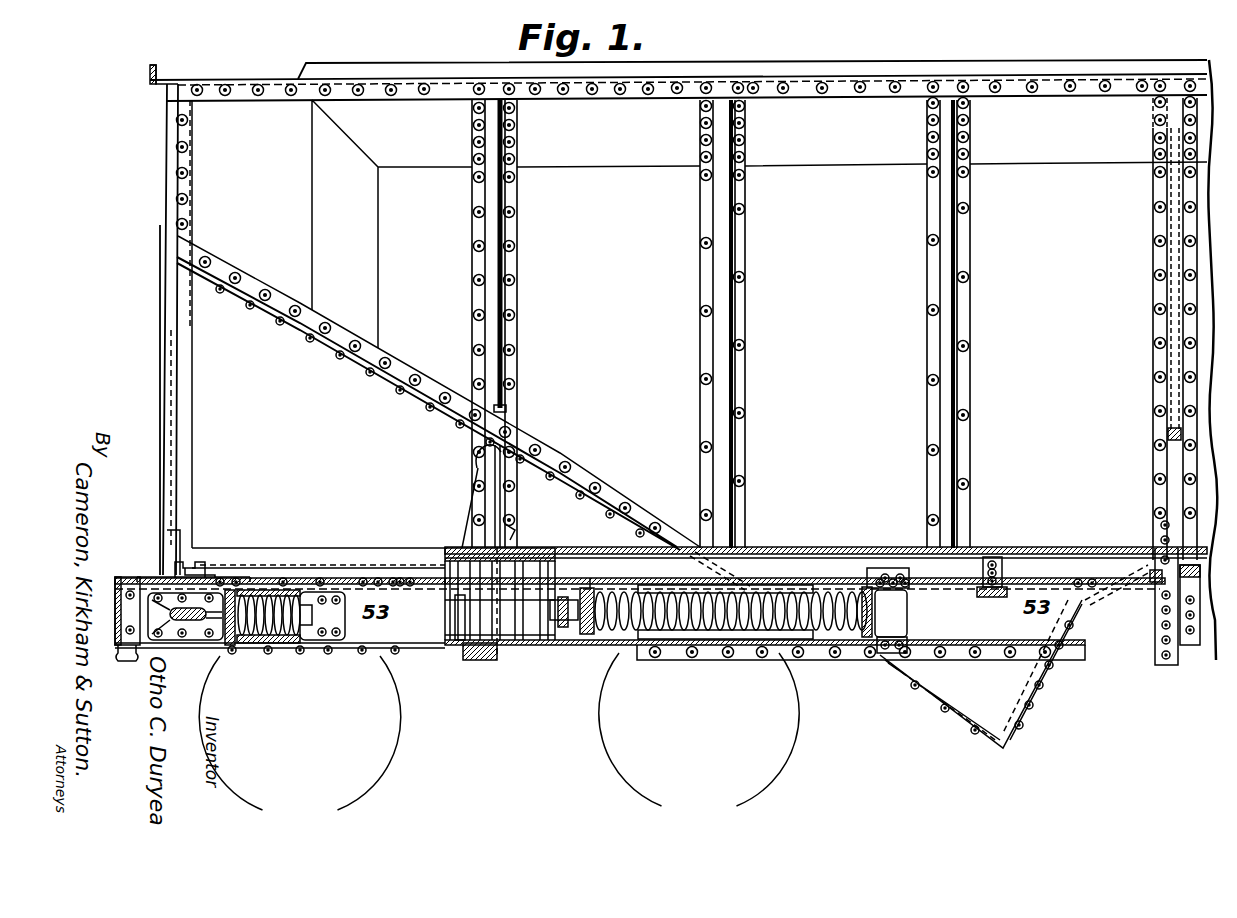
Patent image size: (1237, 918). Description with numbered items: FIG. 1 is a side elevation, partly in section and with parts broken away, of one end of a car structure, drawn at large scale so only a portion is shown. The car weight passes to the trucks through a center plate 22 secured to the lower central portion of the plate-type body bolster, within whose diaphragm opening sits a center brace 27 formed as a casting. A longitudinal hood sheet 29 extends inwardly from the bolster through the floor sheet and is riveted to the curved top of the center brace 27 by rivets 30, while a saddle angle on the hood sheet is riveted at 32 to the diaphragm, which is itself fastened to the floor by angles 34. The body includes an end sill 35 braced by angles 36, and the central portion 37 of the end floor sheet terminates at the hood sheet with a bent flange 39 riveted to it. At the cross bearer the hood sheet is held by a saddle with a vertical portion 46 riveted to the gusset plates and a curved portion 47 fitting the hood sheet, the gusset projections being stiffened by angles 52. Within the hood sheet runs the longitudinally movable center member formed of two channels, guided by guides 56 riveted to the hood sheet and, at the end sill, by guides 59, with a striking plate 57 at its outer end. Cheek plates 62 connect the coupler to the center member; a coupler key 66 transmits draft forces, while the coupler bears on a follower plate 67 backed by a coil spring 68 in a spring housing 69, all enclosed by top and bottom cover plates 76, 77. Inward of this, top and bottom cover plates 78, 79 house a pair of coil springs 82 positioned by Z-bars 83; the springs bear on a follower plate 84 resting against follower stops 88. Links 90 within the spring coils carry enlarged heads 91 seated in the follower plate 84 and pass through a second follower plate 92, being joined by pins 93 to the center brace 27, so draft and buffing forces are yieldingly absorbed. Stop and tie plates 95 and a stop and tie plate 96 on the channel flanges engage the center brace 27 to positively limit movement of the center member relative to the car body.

The center plate 22 is at (470, 660).
The center brace 27 is at (460, 598).
The hood sheet 29 is at (838, 548).
The rivets 30 is at (462, 548).
The rivets 32 is at (508, 525).
The angles 34 is at (485, 462).
The end sill 35 is at (198, 570).
The angles 36 is at (270, 548).
The central portion of end floor sheet 37 is at (527, 455).
The bent flange 39 is at (695, 545).
The vertical portion of saddle 46 is at (1165, 540).
The curved portion of saddle 47 is at (1160, 548).
The angles 52 is at (1190, 660).
The guides 56 is at (1003, 570).
The striking plate 57 is at (118, 580).
The guides 59 is at (173, 557).
The cheek plates 62 is at (330, 645).
The coupler key 66 is at (215, 620).
The follower plate 67 is at (230, 645).
The coil spring 68 is at (285, 590).
The spring housing 69 is at (275, 643).
The top cover plate 76 is at (343, 578).
The bottom cover plate 77 is at (333, 643).
The top cover plate 78 is at (745, 580).
The bottom cover plate 79 is at (710, 650).
The coil springs 82 is at (680, 640).
The Z-bars 83 is at (760, 605).
The follower plate 84 is at (862, 640).
The follower stops 88 is at (905, 620).
The links 90 is at (600, 600).
The enlarged heads 91 is at (895, 665).
The follower plate 92 is at (590, 635).
The pins 93 is at (565, 600).
The stop and tie plates 95 is at (400, 578).
The stop and tie plate 96 is at (595, 578).